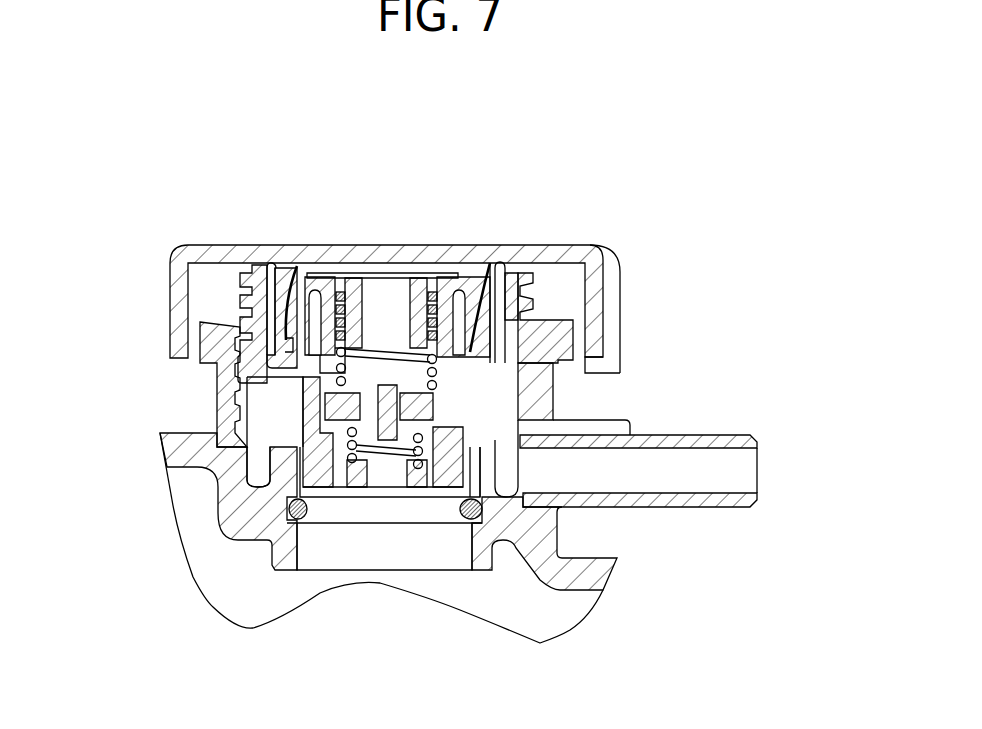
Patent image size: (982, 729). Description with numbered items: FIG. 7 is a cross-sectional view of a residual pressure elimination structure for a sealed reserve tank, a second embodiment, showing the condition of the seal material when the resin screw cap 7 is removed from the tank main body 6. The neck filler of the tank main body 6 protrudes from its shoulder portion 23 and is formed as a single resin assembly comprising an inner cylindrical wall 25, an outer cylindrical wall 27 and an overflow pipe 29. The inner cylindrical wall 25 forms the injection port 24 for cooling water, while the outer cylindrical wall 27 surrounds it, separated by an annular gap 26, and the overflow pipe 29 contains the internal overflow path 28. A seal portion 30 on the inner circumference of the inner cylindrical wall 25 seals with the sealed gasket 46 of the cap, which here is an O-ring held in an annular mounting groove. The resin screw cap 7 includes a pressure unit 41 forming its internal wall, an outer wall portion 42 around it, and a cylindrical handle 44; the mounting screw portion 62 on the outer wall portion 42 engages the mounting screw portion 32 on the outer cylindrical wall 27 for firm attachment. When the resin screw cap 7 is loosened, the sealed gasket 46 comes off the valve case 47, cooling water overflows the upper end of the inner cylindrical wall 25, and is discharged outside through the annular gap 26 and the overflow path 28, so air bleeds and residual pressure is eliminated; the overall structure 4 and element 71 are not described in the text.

The cap device 4 is at (181, 148).
The tank main body 6 is at (152, 452).
The resin screw cap 7 is at (414, 245).
The shoulder portion 23 is at (173, 447).
The injection port 24 is at (445, 550).
The inner cylindrical wall 25 is at (280, 463).
The annular gap 26 is at (553, 420).
The outer cylindrical wall 27 is at (200, 352).
The internal overflow path 28 is at (717, 483).
The overflow pipe 29 is at (703, 435).
The seal portion 30 is at (313, 543).
The mounting screw portion 32 is at (243, 316).
The pressure unit 41 is at (300, 265).
The outer wall portion 42 is at (512, 262).
The cylindrical handle 44 is at (622, 330).
The sealed gasket 46 is at (247, 541).
The valve case 47 is at (585, 367).
The mounting screw portion 62 is at (528, 297).
The O-ring 71 is at (332, 522).